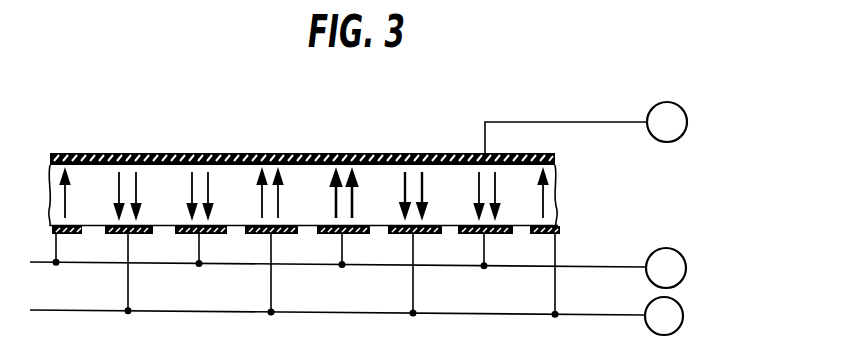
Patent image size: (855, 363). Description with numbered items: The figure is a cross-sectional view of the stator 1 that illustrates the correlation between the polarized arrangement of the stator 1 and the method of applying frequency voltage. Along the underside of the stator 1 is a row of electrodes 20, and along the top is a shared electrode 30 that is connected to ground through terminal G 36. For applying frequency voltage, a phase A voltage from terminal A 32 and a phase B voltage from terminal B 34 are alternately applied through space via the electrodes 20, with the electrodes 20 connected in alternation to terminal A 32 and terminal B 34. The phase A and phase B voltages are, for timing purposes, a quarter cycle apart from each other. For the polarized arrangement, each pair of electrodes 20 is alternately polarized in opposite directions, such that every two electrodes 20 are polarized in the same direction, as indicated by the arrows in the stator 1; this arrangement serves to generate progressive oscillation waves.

The stator 1 is at (303, 195).
The electrodes 20 is at (110, 235).
The electrode 30 is at (177, 153).
The terminal A 32 is at (681, 254).
The terminal B 34 is at (684, 313).
The terminal G 36 is at (688, 111).